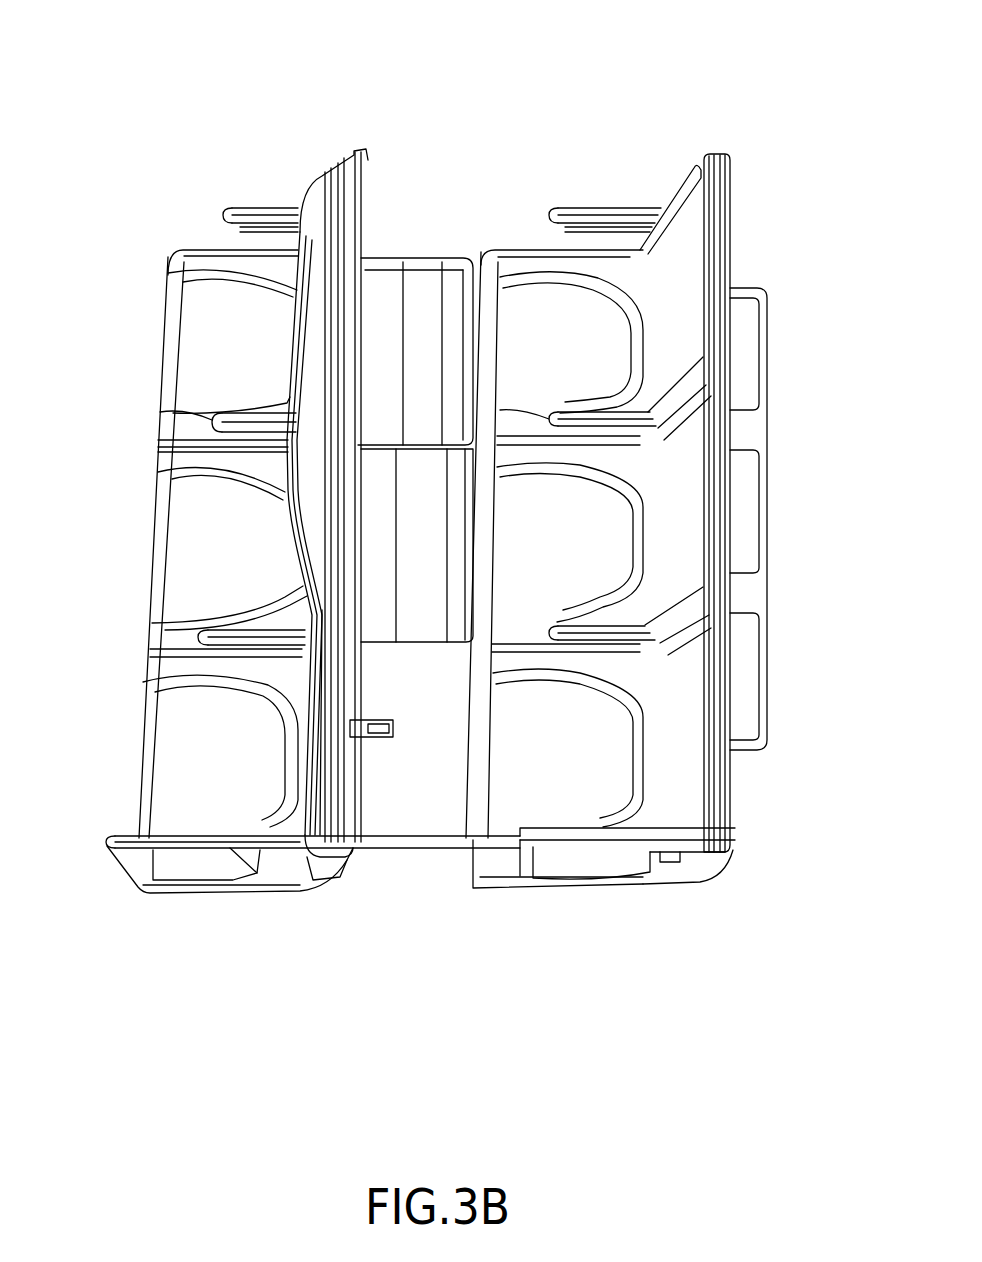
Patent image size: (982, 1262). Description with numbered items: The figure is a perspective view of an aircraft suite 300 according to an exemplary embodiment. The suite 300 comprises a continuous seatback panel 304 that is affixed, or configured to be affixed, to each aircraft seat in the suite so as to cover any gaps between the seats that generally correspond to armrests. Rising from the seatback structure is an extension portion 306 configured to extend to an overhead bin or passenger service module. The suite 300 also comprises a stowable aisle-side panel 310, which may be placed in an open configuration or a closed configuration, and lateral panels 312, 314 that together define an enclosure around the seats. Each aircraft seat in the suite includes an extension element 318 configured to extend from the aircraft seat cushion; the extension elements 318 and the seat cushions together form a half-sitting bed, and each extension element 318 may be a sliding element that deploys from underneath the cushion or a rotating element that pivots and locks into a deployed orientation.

The aircraft suite 300 is at (149, 57).
The continuous seatback panel 304 is at (773, 171).
The extension portion 306 is at (326, 222).
The stowable aisle-side panel 310 is at (380, 873).
The lateral panel 312 is at (540, 887).
The lateral panel 314 is at (598, 855).
The extension element 318 is at (393, 273).